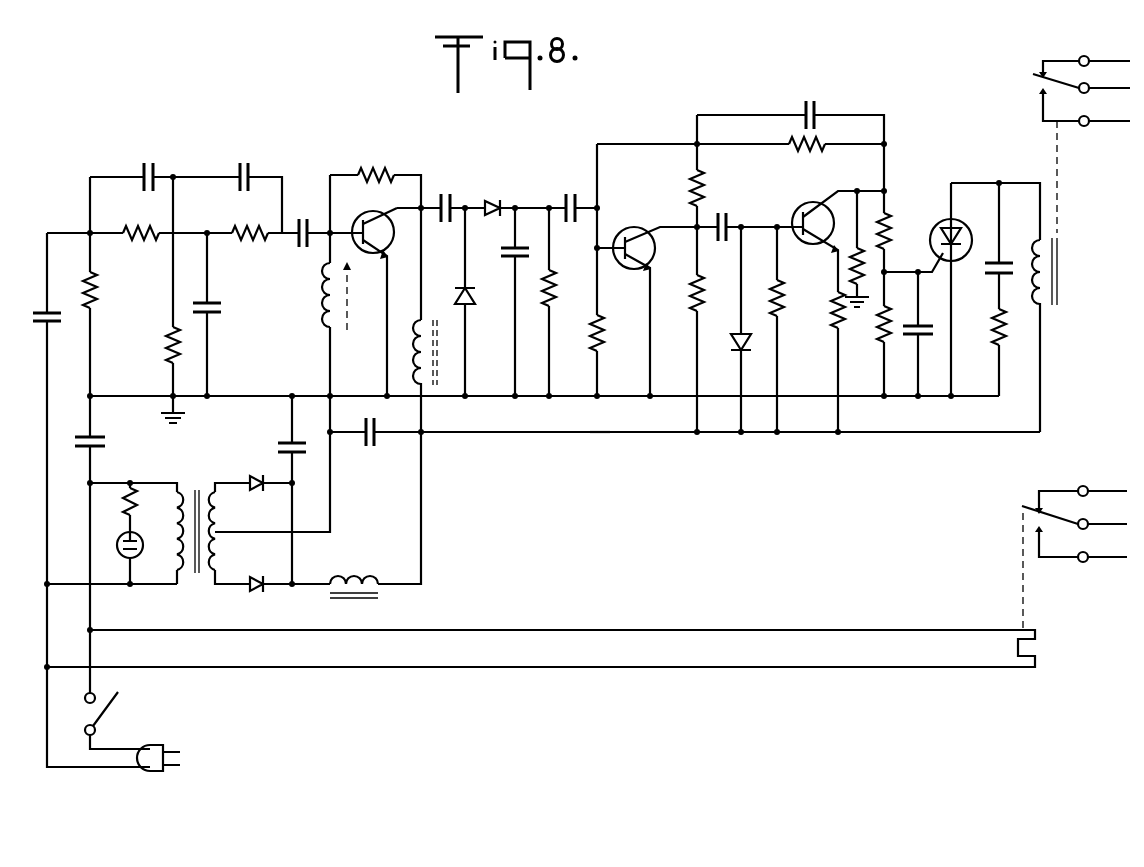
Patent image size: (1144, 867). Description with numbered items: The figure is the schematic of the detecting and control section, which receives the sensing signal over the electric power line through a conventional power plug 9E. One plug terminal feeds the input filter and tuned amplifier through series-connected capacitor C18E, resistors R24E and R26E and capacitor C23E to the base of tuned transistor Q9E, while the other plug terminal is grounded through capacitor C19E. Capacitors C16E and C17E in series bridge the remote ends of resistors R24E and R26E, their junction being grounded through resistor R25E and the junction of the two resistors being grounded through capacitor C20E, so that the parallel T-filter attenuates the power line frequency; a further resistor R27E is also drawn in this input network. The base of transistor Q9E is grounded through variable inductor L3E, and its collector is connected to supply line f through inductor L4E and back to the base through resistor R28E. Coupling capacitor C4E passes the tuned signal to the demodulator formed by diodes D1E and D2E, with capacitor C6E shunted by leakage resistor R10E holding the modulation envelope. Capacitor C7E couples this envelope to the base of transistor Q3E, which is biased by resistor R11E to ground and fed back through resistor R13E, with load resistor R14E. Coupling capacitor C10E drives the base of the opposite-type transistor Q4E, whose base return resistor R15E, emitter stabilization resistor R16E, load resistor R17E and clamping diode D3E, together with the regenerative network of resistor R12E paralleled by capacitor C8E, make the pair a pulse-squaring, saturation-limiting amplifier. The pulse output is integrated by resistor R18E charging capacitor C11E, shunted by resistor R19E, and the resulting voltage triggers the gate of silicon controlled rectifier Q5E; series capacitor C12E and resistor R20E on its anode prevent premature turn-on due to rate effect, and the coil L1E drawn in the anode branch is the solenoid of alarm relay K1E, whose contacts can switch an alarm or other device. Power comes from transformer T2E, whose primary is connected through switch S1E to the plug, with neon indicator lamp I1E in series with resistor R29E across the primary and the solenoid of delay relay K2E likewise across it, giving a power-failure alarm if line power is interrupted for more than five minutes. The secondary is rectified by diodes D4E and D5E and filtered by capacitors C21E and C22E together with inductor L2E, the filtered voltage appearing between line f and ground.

The capacitor C16E is at (168, 148).
The capacitor C17E is at (250, 164).
The capacitor C23E is at (296, 218).
The capacitor C18E is at (40, 311).
The resistor R24E is at (125, 242).
The resistor R27E is at (97, 285).
The resistor R25E is at (165, 350).
The resistor R26E is at (235, 242).
The capacitor C20E is at (222, 303).
The resistor R28E is at (372, 168).
The tuned transistor amplifier Q9E is at (385, 212).
The variable inductor L3E is at (346, 309).
The coupling capacitor C4E is at (440, 190).
The diode D1E is at (493, 198).
The coupling capacitor C7E is at (572, 190).
The capacitor C6E is at (502, 250).
The diode D2E is at (476, 296).
The inductor L4E is at (436, 339).
The leakage resistor R10E is at (556, 282).
The resistor R11E is at (603, 320).
The transistor Q3E is at (643, 228).
The resistor R13E is at (690, 185).
The coupling capacitor C10E is at (718, 214).
The load resistor R14E is at (704, 290).
The diode D3E is at (735, 350).
The resistor R15E is at (785, 298).
The capacitor C8E is at (805, 112).
The resistor R12E is at (800, 150).
The transistor Q4E is at (798, 214).
The load resistor R17E is at (858, 245).
The emitter stabilization resistor R16E is at (830, 318).
The resistor R18E is at (891, 228).
The resistor R19E is at (880, 330).
The capacitor C11E is at (912, 340).
The silicon controlled rectifier Q5E is at (930, 220).
The capacitor C12E is at (1003, 260).
The resistor R20E is at (992, 330).
The relay coil inductor L1E is at (1044, 271).
The alarm relay K1E is at (1072, 81).
The delay relay K2E is at (1086, 537).
The capacitor C19E is at (100, 436).
The filter capacitor C22E is at (278, 447).
The resistor R29E is at (125, 492).
The neon indicator lamp I1E is at (116, 548).
The transformer T2E is at (199, 512).
The rectifier diode D4E is at (254, 489).
The rectifier diode D5E is at (250, 590).
The filter capacitor C21E is at (362, 437).
The inductor L2E is at (354, 601).
The switch S1E is at (118, 697).
The power plug 9E is at (148, 773).
The line f is at (585, 438).